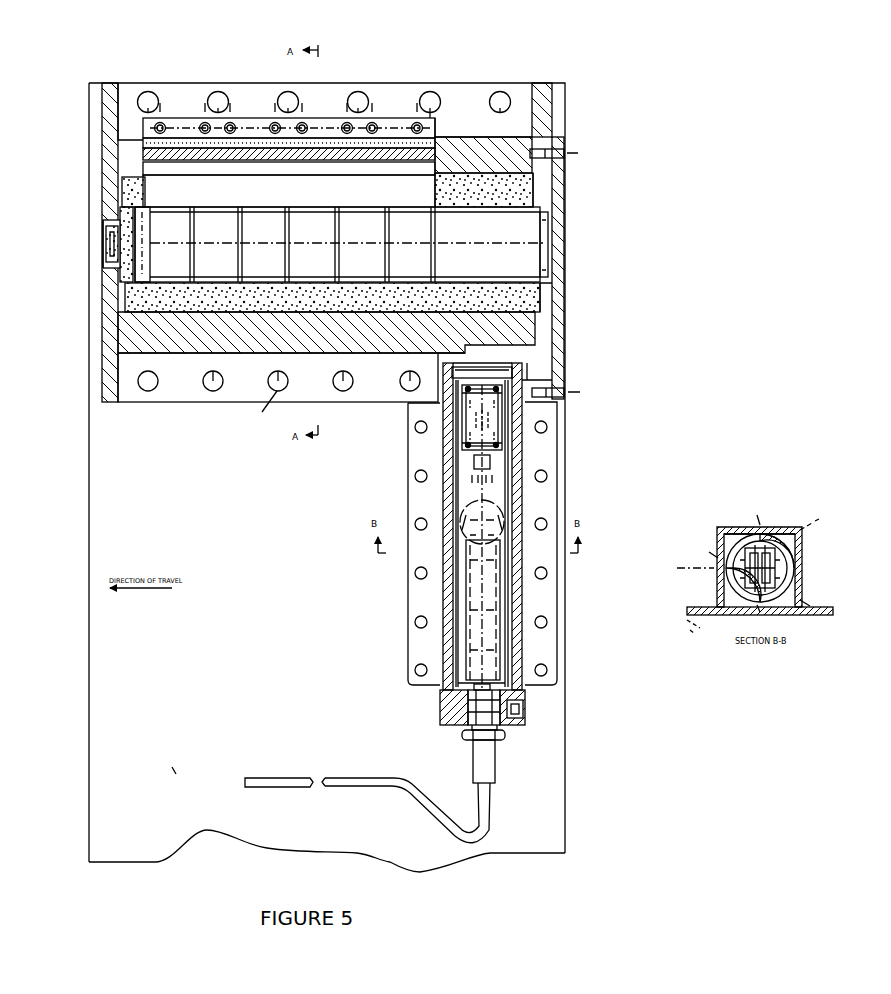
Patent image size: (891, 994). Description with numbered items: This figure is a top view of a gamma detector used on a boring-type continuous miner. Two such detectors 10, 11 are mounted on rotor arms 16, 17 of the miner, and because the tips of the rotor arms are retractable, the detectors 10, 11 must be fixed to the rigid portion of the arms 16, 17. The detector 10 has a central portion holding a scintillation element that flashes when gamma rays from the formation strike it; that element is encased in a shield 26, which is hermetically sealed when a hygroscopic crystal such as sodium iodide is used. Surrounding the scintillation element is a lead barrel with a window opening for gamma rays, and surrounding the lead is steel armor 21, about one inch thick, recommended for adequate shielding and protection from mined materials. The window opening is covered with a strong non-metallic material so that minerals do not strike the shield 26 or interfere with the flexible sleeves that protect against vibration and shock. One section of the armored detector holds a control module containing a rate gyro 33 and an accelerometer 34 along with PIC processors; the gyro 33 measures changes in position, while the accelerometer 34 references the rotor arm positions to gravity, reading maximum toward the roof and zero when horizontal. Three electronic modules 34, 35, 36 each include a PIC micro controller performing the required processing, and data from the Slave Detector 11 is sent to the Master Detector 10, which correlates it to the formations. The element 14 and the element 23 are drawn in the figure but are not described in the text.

The detector 10 is at (262, 197).
The detector 11 is at (289, 191).
The mounting strip 14 is at (289, 139).
The rotor arm 16 is at (341, 244).
The rotor arm 17 is at (478, 614).
The armor 21 is at (326, 332).
The mounting hole 23 is at (432, 97).
The shield 26 is at (122, 305).
The rate gyro 33 is at (777, 522).
The accelerometer 34 is at (800, 612).
The electronic module 35 is at (803, 560).
The electronic module 36 is at (717, 533).